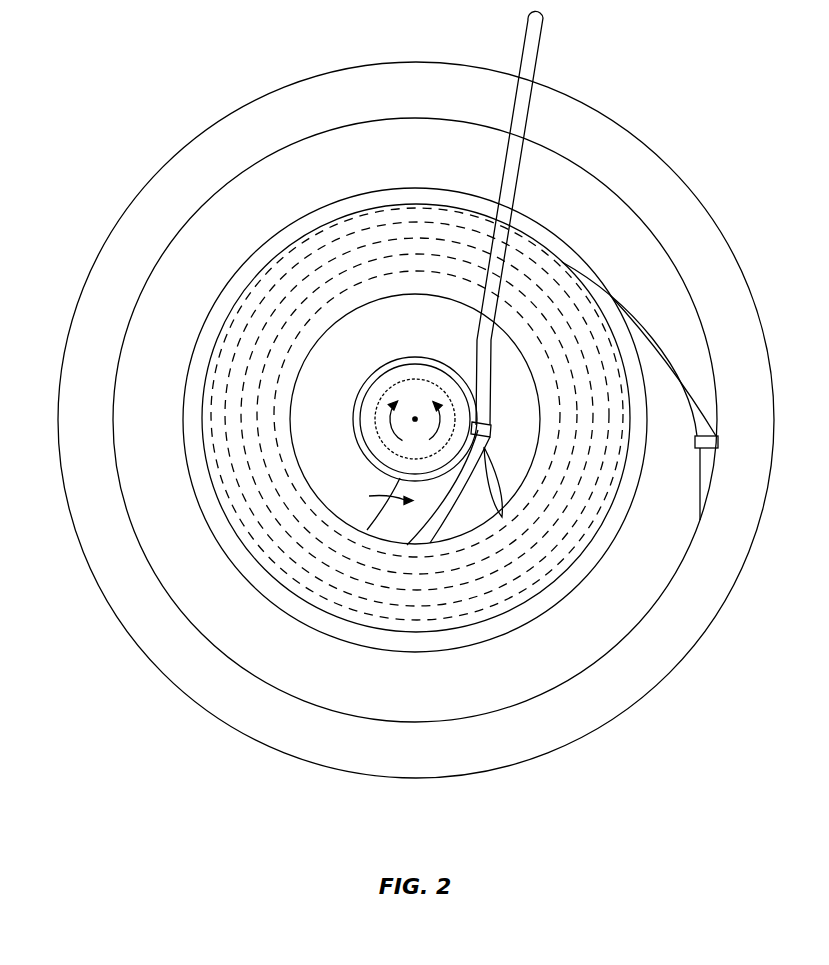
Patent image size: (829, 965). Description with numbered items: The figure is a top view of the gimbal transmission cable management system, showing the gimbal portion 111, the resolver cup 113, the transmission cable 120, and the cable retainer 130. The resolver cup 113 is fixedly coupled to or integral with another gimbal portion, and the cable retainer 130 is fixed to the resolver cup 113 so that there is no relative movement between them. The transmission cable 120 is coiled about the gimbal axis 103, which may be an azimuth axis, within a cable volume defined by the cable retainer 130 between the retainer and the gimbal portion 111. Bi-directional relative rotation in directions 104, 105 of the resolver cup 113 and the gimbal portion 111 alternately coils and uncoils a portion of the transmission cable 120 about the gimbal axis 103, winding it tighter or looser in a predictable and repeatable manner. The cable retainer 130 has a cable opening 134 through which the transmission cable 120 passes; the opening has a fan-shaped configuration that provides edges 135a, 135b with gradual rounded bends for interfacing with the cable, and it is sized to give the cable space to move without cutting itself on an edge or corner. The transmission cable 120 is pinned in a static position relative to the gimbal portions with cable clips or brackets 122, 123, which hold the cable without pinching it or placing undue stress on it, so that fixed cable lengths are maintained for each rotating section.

The gimbal portion 111 is at (417, 62).
The cable retainer 130 is at (347, 200).
The transmission cable 120 is at (528, 107).
The cable clip or bracket 123 is at (697, 449).
The cable clip or bracket 122 is at (491, 433).
The resolver cup 113 is at (372, 398).
The gimbal axis 103 is at (414, 416).
The rotation direction 104 is at (440, 412).
The rotation direction 105 is at (397, 428).
The cable opening 134 is at (374, 498).
The edge of cable opening 135a is at (383, 516).
The edge of cable opening 135b is at (502, 519).